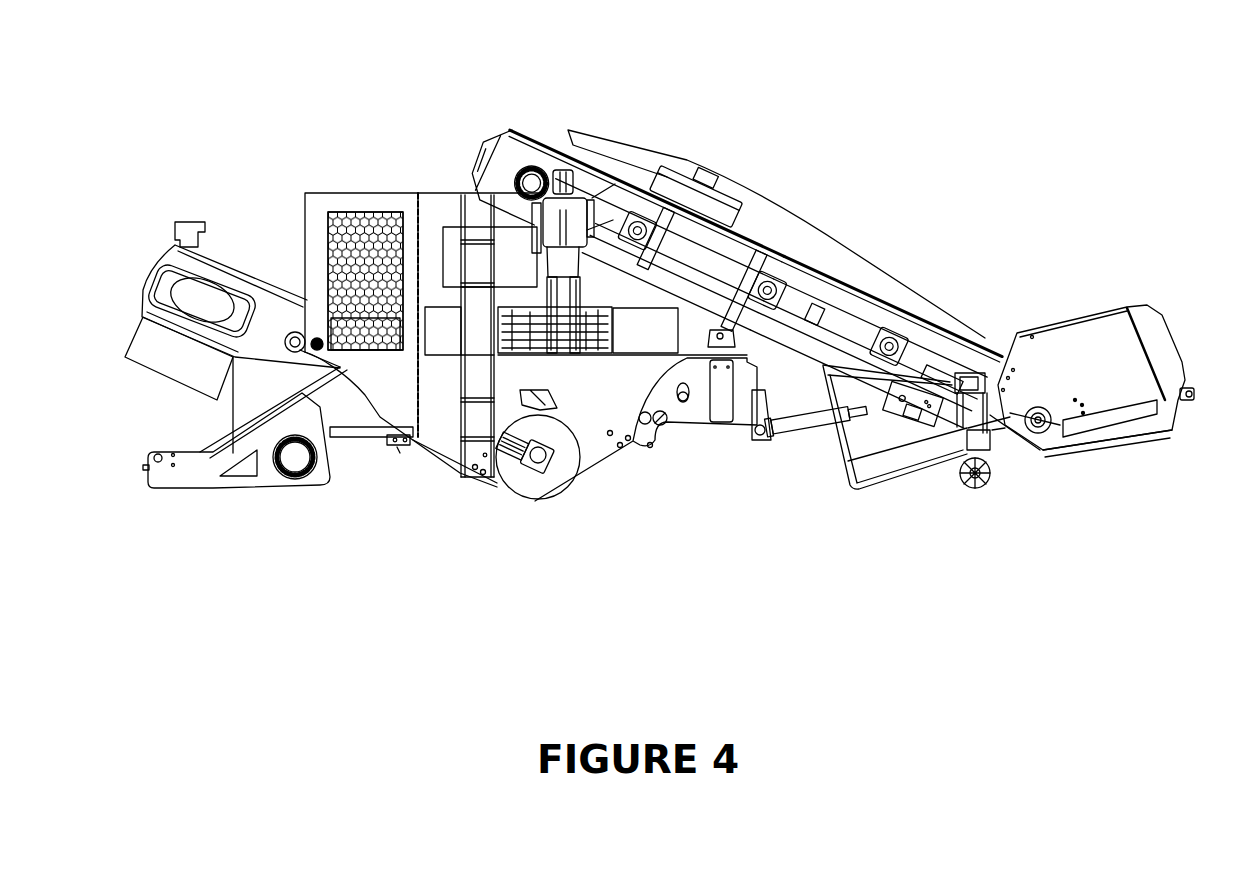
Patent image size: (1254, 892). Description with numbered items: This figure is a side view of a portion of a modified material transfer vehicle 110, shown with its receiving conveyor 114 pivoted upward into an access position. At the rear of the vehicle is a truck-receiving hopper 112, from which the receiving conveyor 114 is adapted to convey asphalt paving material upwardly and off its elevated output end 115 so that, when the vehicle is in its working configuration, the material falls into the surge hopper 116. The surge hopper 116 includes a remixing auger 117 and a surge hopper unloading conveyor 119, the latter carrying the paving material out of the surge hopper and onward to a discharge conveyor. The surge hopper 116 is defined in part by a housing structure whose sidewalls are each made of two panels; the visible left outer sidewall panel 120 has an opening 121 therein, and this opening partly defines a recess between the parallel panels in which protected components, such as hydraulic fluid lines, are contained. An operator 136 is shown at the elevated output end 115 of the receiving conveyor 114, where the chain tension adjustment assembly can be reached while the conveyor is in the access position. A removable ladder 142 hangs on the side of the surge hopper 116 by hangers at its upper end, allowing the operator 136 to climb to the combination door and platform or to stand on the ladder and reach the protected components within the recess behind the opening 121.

The material transfer vehicle 110 is at (928, 88).
The truck-receiving hopper 112 is at (1093, 358).
The receiving conveyor 114 is at (893, 302).
The elevated output end 115 is at (532, 113).
The surge hopper 116 is at (587, 423).
The remixing auger 117 is at (543, 478).
The surge hopper unloading conveyor 119 is at (243, 268).
The left outer sidewall panel 120 is at (641, 294).
The opening 121 is at (523, 306).
The operator 136 is at (560, 220).
The removable ladder 142 is at (458, 213).